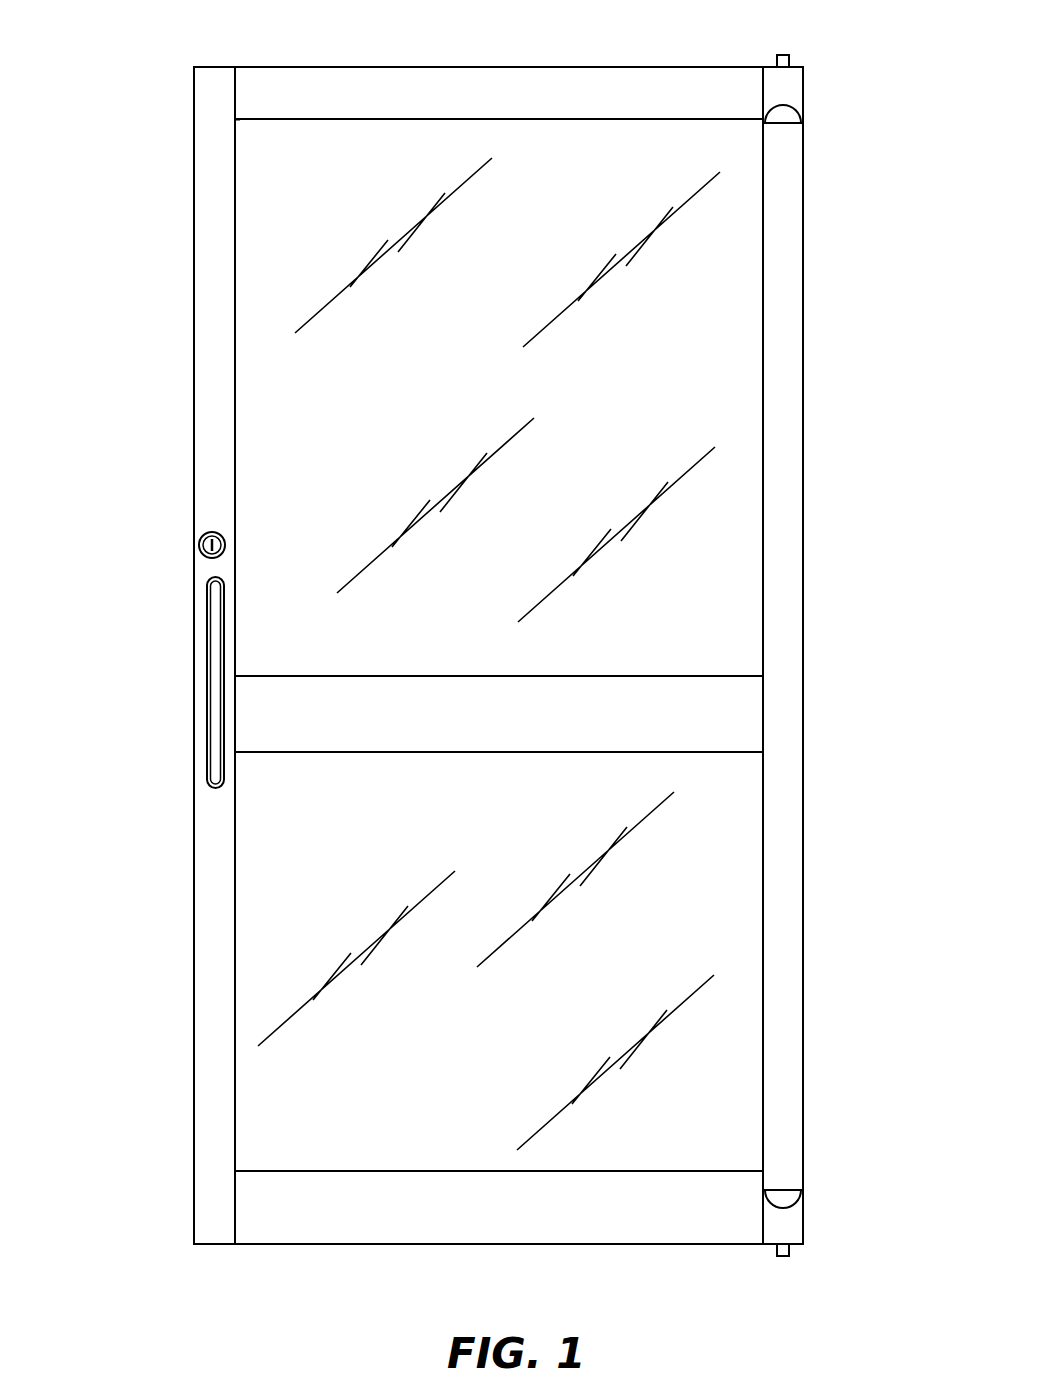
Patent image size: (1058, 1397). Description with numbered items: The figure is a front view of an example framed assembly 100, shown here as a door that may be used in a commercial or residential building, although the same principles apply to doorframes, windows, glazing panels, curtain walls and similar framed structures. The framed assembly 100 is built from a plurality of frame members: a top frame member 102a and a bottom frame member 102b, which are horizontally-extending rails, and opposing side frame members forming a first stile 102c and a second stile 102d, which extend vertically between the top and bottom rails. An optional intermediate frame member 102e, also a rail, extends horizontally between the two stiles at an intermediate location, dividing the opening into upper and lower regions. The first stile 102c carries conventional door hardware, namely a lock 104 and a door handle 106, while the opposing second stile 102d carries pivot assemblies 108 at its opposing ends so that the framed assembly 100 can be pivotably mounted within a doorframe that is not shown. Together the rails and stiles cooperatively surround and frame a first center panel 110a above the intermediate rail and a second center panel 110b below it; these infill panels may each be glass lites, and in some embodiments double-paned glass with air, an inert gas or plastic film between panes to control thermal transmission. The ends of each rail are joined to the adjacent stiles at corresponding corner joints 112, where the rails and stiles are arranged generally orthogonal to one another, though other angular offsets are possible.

The framed assembly 100 is at (123, 131).
The top frame member 102a is at (512, 82).
The bottom frame member 102b is at (370, 1228).
The first stile 102c is at (202, 333).
The second stile 102d is at (790, 357).
The intermediate frame member 102e is at (552, 688).
The lock 104 is at (198, 545).
The door handle 106 is at (210, 650).
The pivot assembly 108 is at (790, 80).
The first center panel 110a is at (720, 283).
The second center panel 110b is at (710, 930).
The corner joint 112 is at (239, 124).